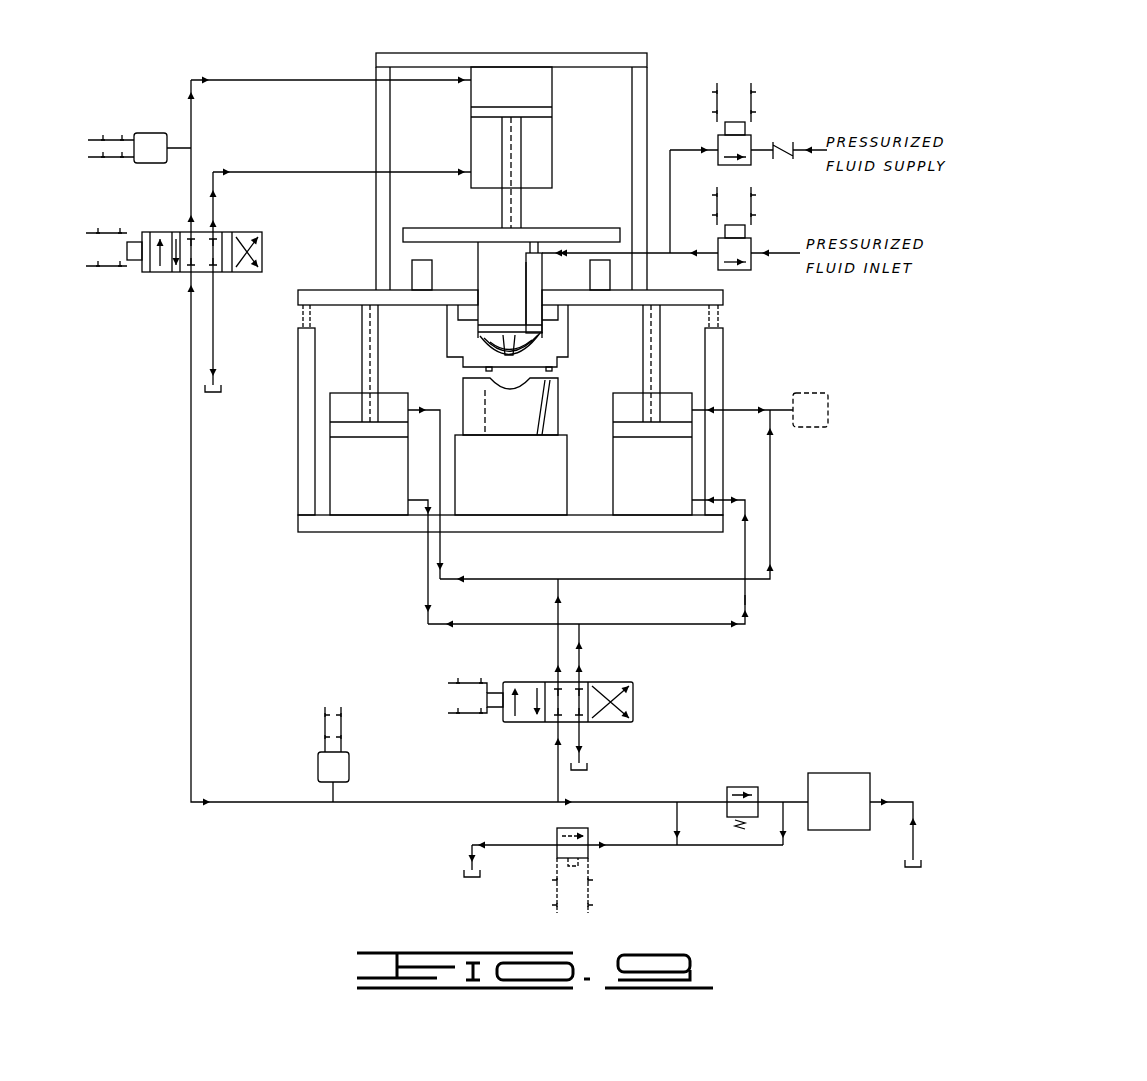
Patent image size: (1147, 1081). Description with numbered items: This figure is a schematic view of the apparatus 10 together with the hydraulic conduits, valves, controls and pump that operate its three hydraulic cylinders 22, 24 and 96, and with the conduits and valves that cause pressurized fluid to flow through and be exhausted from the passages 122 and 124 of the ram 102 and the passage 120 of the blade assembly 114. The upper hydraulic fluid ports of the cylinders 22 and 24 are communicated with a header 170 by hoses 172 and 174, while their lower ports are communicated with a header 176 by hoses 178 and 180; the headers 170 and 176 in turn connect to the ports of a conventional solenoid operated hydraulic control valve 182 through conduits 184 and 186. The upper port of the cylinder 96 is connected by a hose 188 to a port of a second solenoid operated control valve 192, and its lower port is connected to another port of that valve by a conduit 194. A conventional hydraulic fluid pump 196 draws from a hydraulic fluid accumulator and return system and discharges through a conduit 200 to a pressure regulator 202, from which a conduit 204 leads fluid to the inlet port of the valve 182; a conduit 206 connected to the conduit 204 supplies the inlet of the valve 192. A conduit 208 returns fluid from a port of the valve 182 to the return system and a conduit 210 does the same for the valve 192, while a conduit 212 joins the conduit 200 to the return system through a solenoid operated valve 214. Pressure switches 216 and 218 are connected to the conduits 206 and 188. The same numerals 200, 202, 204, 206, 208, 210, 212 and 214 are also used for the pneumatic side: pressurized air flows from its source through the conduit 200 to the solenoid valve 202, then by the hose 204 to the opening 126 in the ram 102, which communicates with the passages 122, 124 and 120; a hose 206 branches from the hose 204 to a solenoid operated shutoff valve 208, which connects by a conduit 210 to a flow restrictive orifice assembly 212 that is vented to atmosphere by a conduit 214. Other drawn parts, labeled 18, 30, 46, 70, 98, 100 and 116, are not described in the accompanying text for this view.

The apparatus 10 is at (592, 48).
The hydraulic fluid reservoir 18 is at (922, 832).
The hydraulic cylinder 22 is at (330, 493).
The hydraulic cylinder 24 is at (694, 472).
The table 30 is at (608, 308).
The die holder 46 is at (580, 342).
The lower die 70 is at (545, 410).
The hydraulic cylinder 96 is at (553, 135).
The piston rod 98 is at (514, 175).
The platen 100 is at (445, 209).
The ram 102 is at (478, 258).
The blade assembly 114 is at (474, 340).
The upper die 116 is at (494, 327).
The passage 120 is at (505, 338).
The passage 122 is at (526, 272).
The passage 124 is at (534, 252).
The opening 126 is at (545, 253).
The header 170 is at (630, 580).
The conduit or hose 172 is at (432, 468).
The conduit or hose 174 is at (772, 470).
The header 176 is at (678, 622).
The conduit or hose 178 is at (428, 560).
The conduit or hose 180 is at (748, 600).
The solenoid operated hydraulic control valve 182 is at (618, 684).
The conduit 184 is at (560, 604).
The conduit 186 is at (582, 650).
The conduit or hose 188 is at (298, 82).
The solenoid operated hydraulic fluid control valve 192 is at (160, 272).
The conduit 194 is at (302, 172).
The hydraulic fluid pump 196 is at (838, 773).
The conduit 200 is at (776, 252).
The hydraulic fluid pressure regulator 202 is at (738, 272).
The conduit 204 is at (700, 256).
The conduit 206 is at (191, 340).
The conduit 208 is at (718, 137).
The conduit 210 is at (214, 342).
The conduit 212 is at (786, 165).
The solenoid operated valve 214 is at (812, 148).
The hydraulic fluid pressure switch 216 is at (318, 768).
The hydraulic fluid pressure switch 218 is at (154, 132).